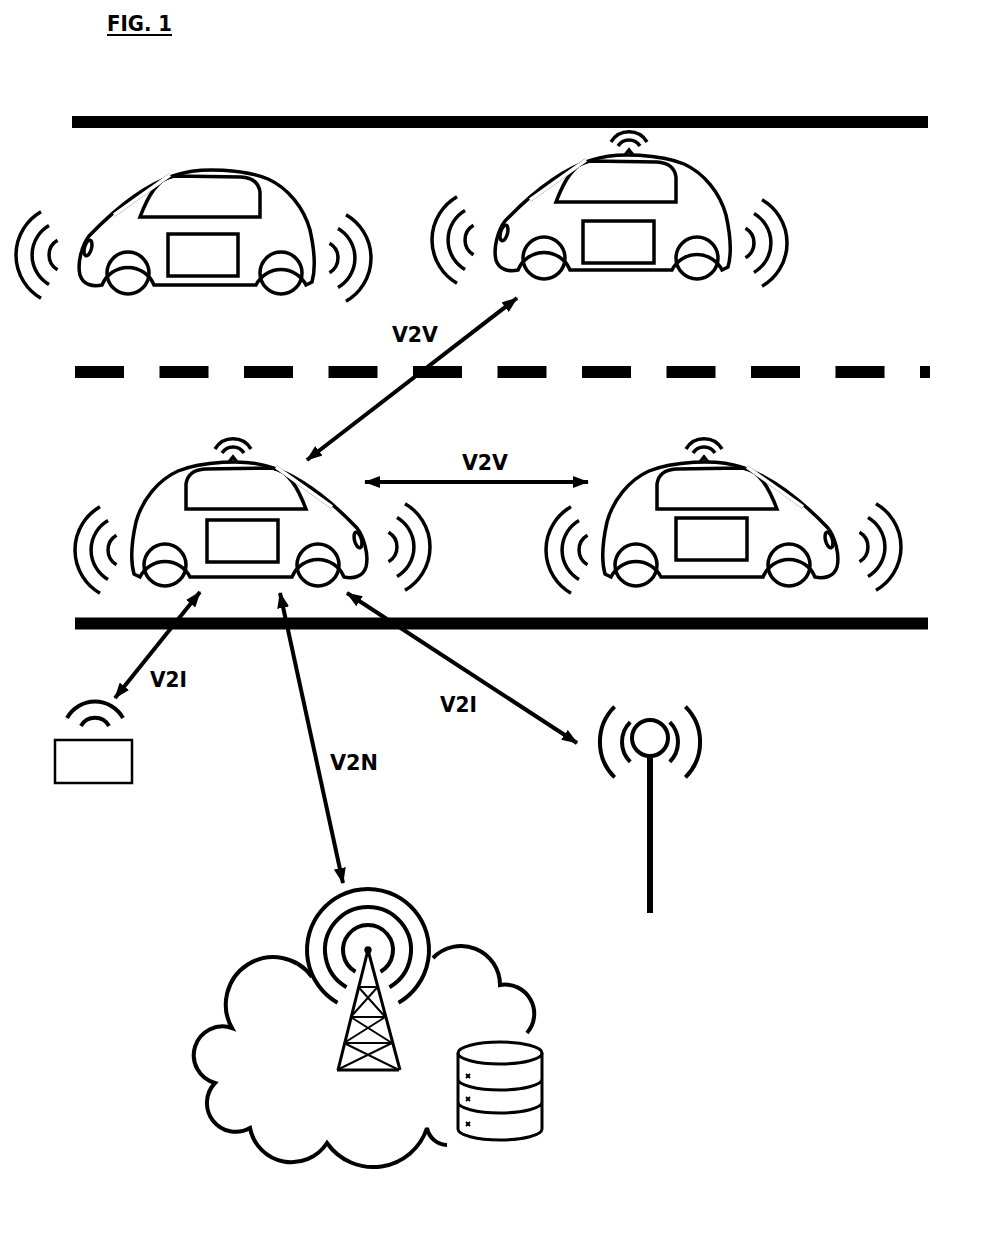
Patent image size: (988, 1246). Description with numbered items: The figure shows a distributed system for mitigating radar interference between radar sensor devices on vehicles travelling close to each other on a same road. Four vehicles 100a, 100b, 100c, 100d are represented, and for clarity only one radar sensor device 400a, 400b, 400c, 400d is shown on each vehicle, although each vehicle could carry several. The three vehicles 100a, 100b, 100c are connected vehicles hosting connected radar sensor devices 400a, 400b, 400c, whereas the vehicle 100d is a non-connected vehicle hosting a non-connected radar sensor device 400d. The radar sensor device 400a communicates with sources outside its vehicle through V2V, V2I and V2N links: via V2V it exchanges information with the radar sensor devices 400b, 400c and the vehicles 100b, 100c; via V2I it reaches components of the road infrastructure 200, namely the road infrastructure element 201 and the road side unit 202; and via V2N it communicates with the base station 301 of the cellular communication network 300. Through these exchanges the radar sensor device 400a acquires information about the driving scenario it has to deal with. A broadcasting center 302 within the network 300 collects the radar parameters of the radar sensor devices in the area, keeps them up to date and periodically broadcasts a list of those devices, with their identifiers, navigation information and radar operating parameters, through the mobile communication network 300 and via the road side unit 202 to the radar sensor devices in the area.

The vehicle 100a is at (240, 516).
The vehicle 100b is at (723, 573).
The vehicle 100c is at (598, 209).
The vehicle 100d is at (193, 223).
The radar sensor device 400a is at (219, 552).
The radar sensor device 400b is at (711, 539).
The radar sensor device 400c is at (595, 253).
The radar sensor device 400d is at (180, 266).
The road infrastructure 200 is at (397, 824).
The road infrastructure element 201 is at (110, 759).
The road side unit 202 is at (653, 782).
The cellular communication network 300 is at (293, 1085).
The base station 301 is at (403, 903).
The broadcasting center 302 is at (527, 1098).